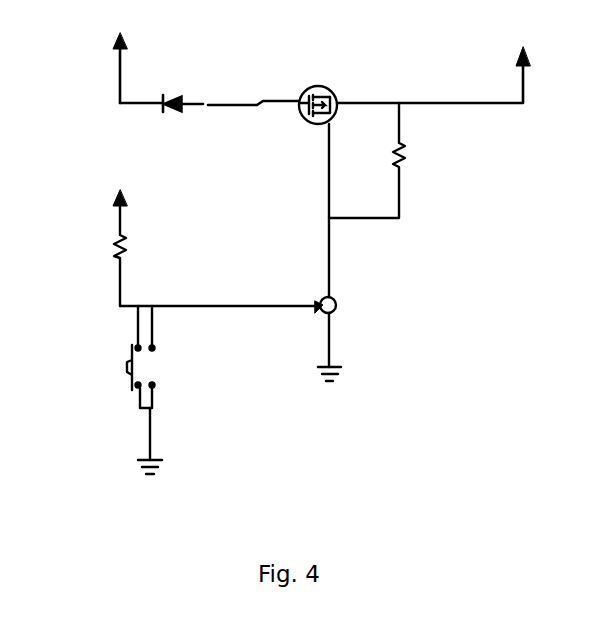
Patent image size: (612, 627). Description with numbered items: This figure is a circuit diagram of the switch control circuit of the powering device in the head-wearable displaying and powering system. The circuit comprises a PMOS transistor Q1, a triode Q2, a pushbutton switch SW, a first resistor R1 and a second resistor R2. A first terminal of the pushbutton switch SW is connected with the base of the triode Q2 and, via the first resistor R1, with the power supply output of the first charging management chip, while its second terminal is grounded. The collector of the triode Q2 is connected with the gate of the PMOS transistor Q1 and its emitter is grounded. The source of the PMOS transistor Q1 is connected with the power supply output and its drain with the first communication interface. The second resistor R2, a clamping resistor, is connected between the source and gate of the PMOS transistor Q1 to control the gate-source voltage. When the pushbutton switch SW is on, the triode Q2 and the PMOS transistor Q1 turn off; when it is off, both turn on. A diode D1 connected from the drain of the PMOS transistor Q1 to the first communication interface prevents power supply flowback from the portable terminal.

The diode D1 is at (166, 90).
The PMOS transistor Q1 is at (310, 180).
The triode Q2 is at (230, 333).
The first resistor R1 is at (91, 248).
The second resistor R2 is at (382, 160).
The pushbutton switch SW is at (118, 390).